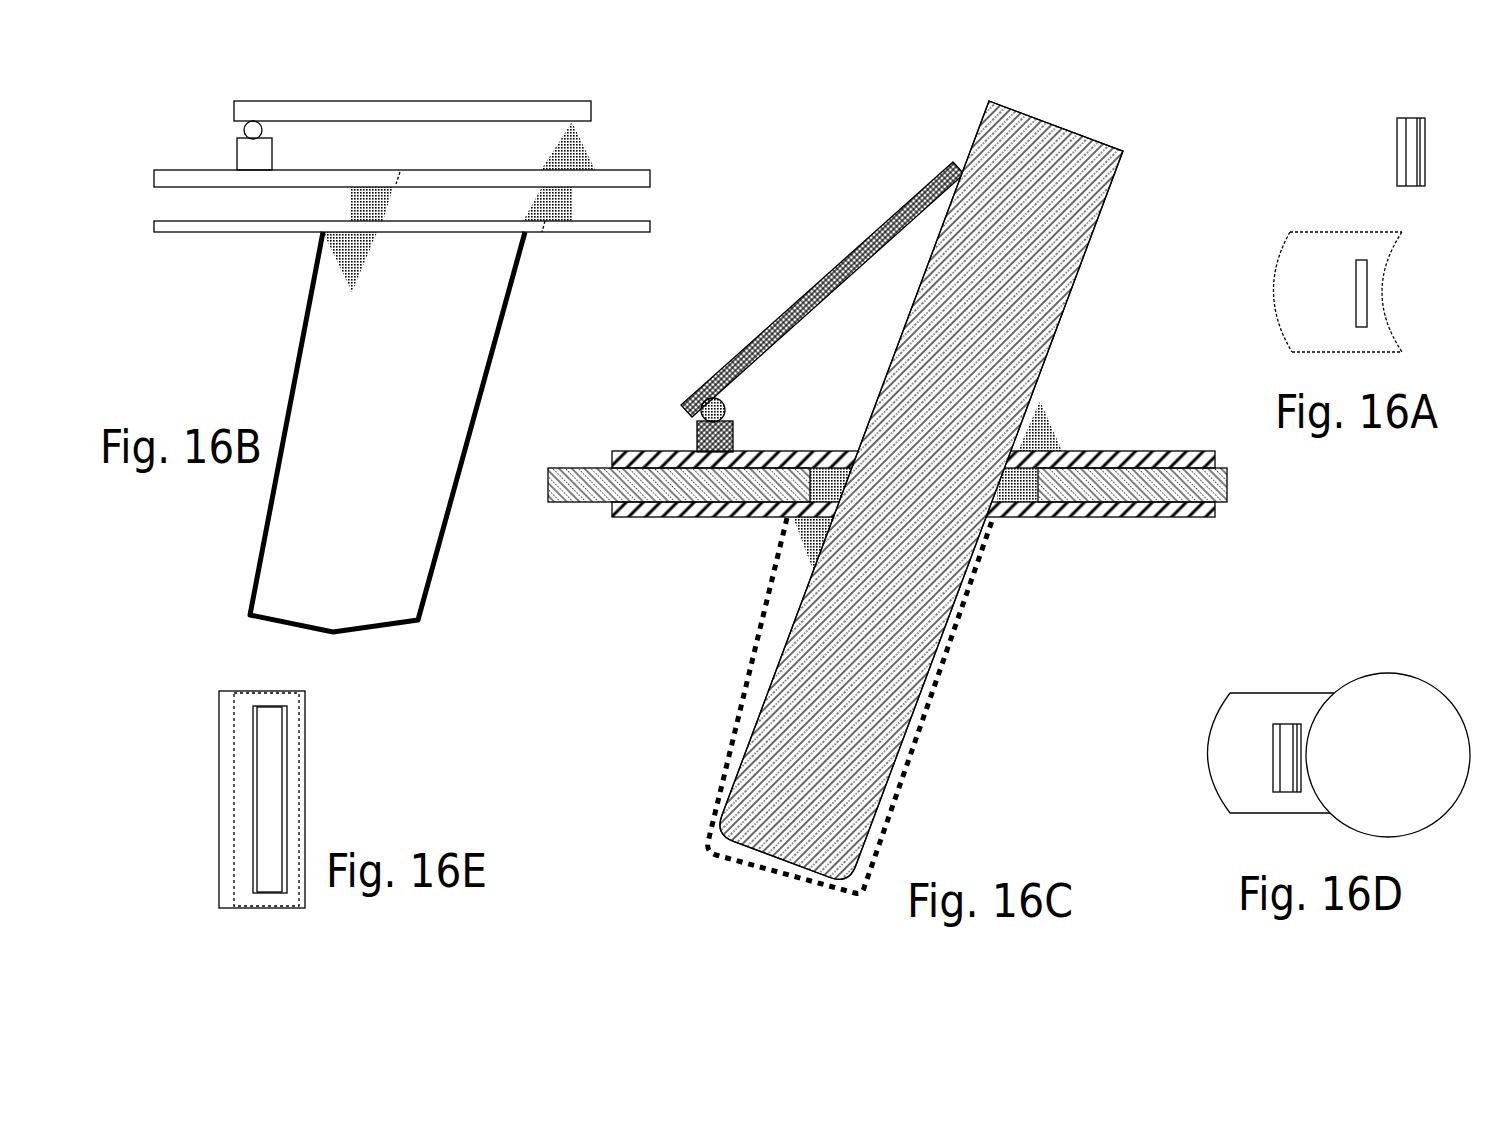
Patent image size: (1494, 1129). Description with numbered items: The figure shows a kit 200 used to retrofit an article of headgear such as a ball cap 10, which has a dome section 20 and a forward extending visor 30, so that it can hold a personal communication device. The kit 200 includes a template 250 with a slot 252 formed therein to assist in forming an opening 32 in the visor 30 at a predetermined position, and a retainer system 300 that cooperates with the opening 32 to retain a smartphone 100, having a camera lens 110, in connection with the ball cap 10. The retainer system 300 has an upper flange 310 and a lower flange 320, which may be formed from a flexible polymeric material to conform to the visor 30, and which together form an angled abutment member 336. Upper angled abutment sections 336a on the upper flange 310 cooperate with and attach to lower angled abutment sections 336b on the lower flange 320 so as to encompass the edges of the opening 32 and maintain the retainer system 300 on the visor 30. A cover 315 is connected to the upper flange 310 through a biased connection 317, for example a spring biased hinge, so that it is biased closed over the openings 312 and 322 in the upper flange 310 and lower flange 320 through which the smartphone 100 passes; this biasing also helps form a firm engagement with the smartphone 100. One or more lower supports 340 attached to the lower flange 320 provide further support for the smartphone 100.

In FIG. 16D, the ball cap 10 is at (1311, 711).
In FIG. 16D, the dome section 20 is at (1415, 683).
In FIG. 16C, the visor 30 is at (887, 561).
In FIG. 16D, the visor 30 is at (1218, 787).
In FIG. 16C, the opening 32 is at (1070, 518).
In FIG. 16C, the smartphone 100 is at (938, 492).
In FIG. 16C, the camera lens 110 is at (888, 767).
In FIG. 16A, the kit 200 is at (1321, 196).
In FIG. 16A, the template 250 is at (1288, 268).
In FIG. 16A, the slot 252 is at (1356, 278).
In FIG. 16B, the retainer system 300 is at (464, 196).
In FIG. 16A, the retainer system 300 is at (1371, 113).
In FIG. 16D, the retainer system 300 is at (1277, 747).
In FIG. 16E, the retainer system 300 is at (267, 785).
In FIG. 16B, the upper flange 310 is at (154, 178).
In FIG. 16C, the upper flange 310 is at (636, 451).
In FIG. 16A, the upper flange 310 is at (1397, 173).
In FIG. 16D, the upper flange 310 is at (1268, 788).
In FIG. 16E, the upper flange 310 is at (224, 777).
In FIG. 16B, the opening 312 is at (398, 177).
In FIG. 16C, the opening 312 is at (1073, 451).
In FIG. 16E, the opening 312 is at (268, 827).
In FIG. 16B, the cover 315 is at (327, 104).
In FIG. 16C, the cover 315 is at (762, 329).
In FIG. 16A, the cover 315 is at (1410, 120).
In FIG. 16D, the cover 315 is at (1288, 727).
In FIG. 16B, the hinge 317 is at (242, 137).
In FIG. 16C, the hinge 317 is at (725, 405).
In FIG. 16B, the lower flange 320 is at (212, 230).
In FIG. 16C, the lower flange 320 is at (672, 518).
In FIG. 16B, the opening 322 is at (523, 225).
In FIG. 16C, the opening 322 is at (1005, 518).
In FIG. 16E, the opening 322 is at (335, 799).
In FIG. 16B, the angled abutment member 336 is at (464, 207).
In FIG. 16C, the angled abutment member 336 is at (914, 518).
In FIG. 16E, the angled abutment member 336 is at (260, 735).
In FIG. 16B, the upper angled abutment sections 336a is at (358, 187).
In FIG. 16C, the upper angled abutment sections 336a is at (821, 451).
In FIG. 16B, the lower angled abutment sections 336b is at (438, 282).
In FIG. 16C, the lower angled abutment sections 336b is at (877, 567).
In FIG. 16B, the lower supports 340 is at (427, 605).
In FIG. 16C, the lower supports 340 is at (933, 682).